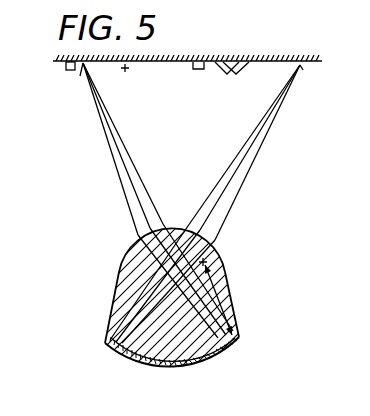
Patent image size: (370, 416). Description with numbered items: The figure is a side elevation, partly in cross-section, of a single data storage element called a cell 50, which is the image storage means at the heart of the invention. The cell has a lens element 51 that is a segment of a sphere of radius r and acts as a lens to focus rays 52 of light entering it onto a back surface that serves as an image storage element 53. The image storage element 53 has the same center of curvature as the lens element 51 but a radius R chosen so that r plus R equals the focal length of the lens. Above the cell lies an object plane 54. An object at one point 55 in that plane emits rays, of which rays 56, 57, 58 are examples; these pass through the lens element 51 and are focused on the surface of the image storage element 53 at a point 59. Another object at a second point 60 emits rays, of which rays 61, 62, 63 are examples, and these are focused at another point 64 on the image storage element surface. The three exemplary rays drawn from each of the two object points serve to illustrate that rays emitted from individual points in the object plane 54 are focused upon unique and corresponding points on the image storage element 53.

The cell 50 is at (230, 273).
The lens element 51 is at (174, 221).
The rays 52 is at (190, 200).
The image storage element 53 is at (143, 363).
The object plane 54 is at (211, 61).
The object point 55 is at (83, 66).
The ray 56 is at (106, 127).
The ray 57 is at (118, 150).
The ray 58 is at (140, 178).
The focus point 59 is at (199, 366).
The object point 60 is at (304, 66).
The ray 61 is at (260, 123).
The ray 62 is at (245, 157).
The ray 63 is at (238, 192).
The focus point 64 is at (110, 343).